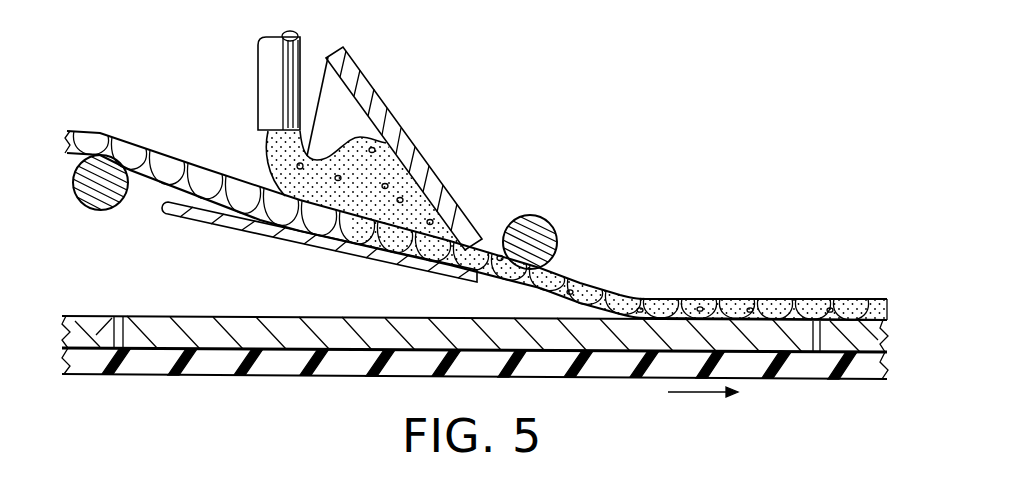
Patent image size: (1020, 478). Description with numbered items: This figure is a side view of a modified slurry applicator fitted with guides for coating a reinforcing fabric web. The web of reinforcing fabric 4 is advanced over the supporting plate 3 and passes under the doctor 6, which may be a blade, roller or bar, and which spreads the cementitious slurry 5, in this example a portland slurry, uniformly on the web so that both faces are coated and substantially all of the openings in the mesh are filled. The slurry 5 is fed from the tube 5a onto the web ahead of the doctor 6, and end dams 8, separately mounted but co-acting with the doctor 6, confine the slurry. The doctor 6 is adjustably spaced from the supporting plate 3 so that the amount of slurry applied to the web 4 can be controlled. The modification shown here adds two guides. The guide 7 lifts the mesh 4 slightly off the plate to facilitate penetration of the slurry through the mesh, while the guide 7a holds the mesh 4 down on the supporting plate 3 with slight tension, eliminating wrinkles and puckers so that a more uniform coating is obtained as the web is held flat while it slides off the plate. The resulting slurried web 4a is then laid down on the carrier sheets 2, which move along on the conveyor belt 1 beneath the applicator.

The conveyor belt 1 is at (207, 362).
The carrier sheets 2 is at (138, 316).
The supporting plate 3 is at (173, 212).
The web of reinforcing fabric 4 is at (78, 128).
The slurried web 4a is at (792, 298).
The cementitious slurry 5 is at (267, 170).
The tube 5a is at (270, 72).
The doctor 6 is at (385, 116).
The guide 7 is at (105, 210).
The guide 7a is at (525, 215).
The end dams 8 is at (328, 82).